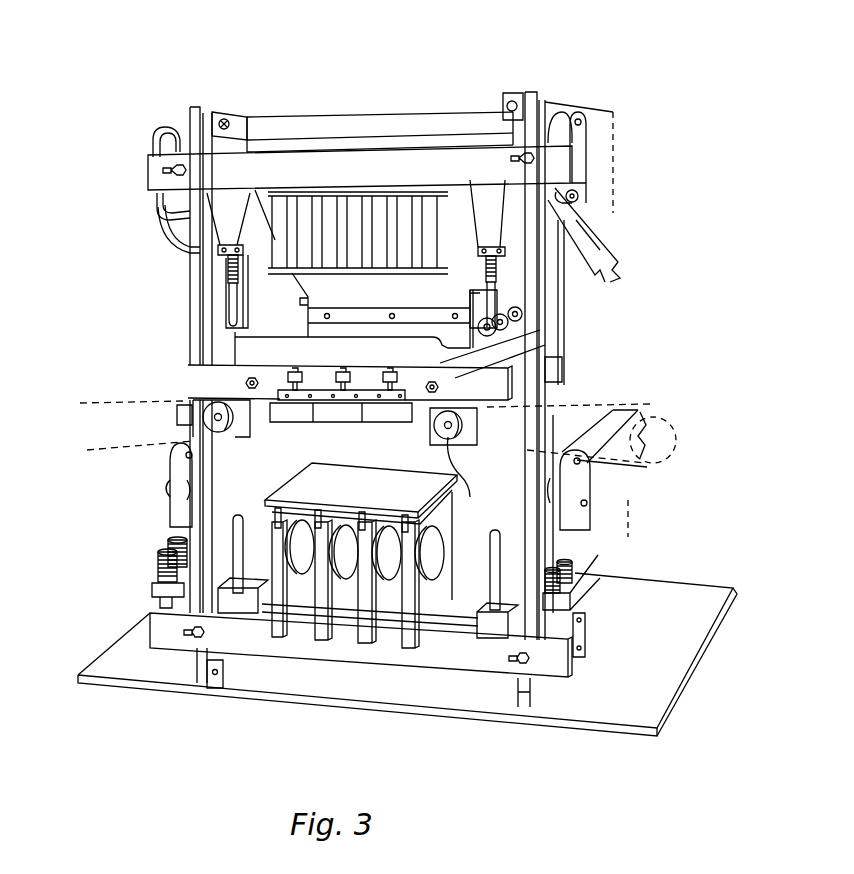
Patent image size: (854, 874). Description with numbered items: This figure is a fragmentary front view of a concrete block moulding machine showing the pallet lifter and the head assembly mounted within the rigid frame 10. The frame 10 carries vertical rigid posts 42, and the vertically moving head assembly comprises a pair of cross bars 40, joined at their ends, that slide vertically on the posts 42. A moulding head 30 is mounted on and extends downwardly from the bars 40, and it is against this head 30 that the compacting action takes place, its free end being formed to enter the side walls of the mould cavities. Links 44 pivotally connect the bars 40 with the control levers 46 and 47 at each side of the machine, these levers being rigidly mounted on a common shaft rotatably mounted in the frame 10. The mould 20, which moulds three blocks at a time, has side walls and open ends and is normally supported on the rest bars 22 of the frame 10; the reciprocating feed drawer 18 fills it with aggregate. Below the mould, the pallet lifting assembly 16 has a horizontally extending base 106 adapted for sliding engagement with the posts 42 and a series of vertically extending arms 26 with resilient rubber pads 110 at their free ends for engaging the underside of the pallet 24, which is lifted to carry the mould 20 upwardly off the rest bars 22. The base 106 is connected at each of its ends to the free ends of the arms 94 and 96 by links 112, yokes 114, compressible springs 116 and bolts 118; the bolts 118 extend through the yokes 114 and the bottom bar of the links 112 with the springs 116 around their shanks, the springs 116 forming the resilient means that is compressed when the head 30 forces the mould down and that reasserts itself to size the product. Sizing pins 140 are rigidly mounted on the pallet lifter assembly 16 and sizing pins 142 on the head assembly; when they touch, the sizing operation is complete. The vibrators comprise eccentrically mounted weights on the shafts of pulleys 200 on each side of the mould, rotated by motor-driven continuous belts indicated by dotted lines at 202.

The rigid frame 10 is at (581, 90).
The pallet lifting assembly 16 is at (606, 623).
The feed drawer 18 is at (514, 298).
The mould 20 is at (290, 414).
The rest bars 22 is at (180, 412).
The pallet 24 is at (373, 480).
The arms 26 is at (445, 534).
The moulding head 30 is at (388, 270).
The cross bars 40 is at (445, 152).
The rigid posts 42 is at (193, 107).
The links 44 is at (168, 203).
The control lever 46 is at (172, 232).
The control lever 47 is at (612, 232).
The arm 94 is at (165, 488).
The arm 96 is at (617, 484).
The horizontally extending base 106 is at (308, 650).
The resilient pads 110 is at (272, 505).
The links 112 is at (172, 461).
The yokes 114 is at (160, 590).
The compressible springs 116 is at (160, 562).
The bolts 118 is at (168, 550).
The sizing pins 140 is at (254, 550).
The sizing pins 142 is at (233, 316).
The pulleys 200 is at (473, 477).
The continuous belts 202 is at (577, 408).